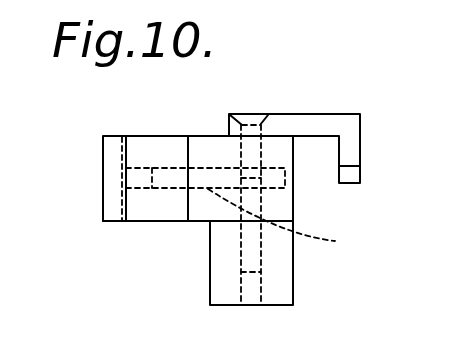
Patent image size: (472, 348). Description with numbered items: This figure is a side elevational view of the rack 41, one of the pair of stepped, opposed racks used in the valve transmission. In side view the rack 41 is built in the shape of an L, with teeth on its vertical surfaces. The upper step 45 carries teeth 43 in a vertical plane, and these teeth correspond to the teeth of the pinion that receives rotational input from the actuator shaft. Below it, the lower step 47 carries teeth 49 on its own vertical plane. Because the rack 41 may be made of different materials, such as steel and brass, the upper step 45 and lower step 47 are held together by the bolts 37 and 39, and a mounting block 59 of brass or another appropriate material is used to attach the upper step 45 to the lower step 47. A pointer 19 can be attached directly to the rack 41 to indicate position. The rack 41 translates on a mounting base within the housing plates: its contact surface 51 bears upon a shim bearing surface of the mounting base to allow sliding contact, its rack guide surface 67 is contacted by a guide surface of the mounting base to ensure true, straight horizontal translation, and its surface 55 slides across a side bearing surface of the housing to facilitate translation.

The pointer 19 is at (346, 122).
The bolt 37 is at (290, 222).
The bolt 39 is at (238, 155).
The rack 41 is at (162, 150).
The teeth 43 is at (107, 165).
The upper step 45 is at (150, 223).
The lower step 47 is at (294, 288).
The teeth 49 is at (224, 270).
The contact surface 51 is at (252, 305).
The surface 55 is at (294, 253).
The mounting block 59 is at (285, 149).
The rack guide surface 67 is at (186, 223).